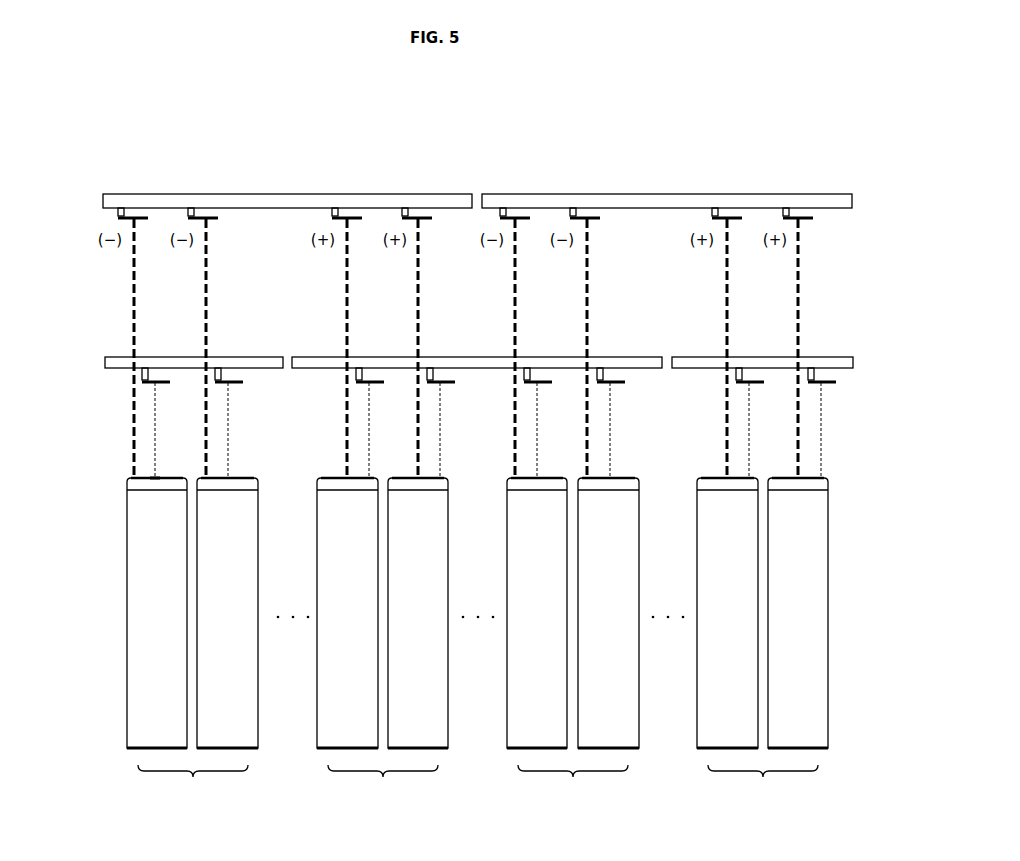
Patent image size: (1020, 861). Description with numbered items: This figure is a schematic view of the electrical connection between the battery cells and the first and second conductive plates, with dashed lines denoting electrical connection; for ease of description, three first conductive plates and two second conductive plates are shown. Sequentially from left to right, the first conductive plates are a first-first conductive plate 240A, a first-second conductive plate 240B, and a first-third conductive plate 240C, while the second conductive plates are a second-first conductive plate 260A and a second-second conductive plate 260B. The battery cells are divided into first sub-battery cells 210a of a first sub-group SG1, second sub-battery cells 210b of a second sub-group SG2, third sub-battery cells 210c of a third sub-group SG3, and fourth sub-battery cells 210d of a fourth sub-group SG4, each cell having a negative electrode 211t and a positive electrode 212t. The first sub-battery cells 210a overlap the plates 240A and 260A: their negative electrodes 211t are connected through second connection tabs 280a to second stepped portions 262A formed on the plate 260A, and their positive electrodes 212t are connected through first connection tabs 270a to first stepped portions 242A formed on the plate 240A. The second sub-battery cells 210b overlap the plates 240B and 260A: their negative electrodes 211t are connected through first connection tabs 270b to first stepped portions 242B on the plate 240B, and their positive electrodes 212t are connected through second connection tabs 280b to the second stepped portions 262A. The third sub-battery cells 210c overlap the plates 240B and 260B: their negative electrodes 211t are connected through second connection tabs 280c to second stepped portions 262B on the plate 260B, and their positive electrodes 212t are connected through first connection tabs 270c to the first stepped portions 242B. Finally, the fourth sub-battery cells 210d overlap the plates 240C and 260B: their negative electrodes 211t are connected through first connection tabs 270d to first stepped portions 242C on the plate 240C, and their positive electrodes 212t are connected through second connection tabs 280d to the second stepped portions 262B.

The second-first conductive plate 260A is at (362, 193).
The second-second conductive plate 260B is at (765, 193).
The second stepped portions 262A is at (118, 218).
The second stepped portions 262B is at (800, 218).
The second connection tabs 280a is at (134, 294).
The second connection tabs 280b is at (420, 287).
The second connection tabs 280c is at (590, 308).
The second connection tabs 280d is at (800, 288).
The first-first conductive plate 240A is at (120, 370).
The first-second conductive plate 240B is at (436, 357).
The first-third conductive plate 240C is at (815, 357).
The first stepped portions 242A is at (150, 383).
The first stepped portions 242B is at (362, 383).
The first stepped portions 242C is at (472, 601).
The first connection tabs 270a is at (228, 455).
The first connection tabs 270b is at (369, 455).
The first connection tabs 270c is at (537, 454).
The first connection tabs 270d is at (821, 442).
The first sub-battery cells 210a is at (122, 652).
The second sub-battery cells 210b is at (320, 736).
The third sub-battery cells 210c is at (510, 736).
The fourth sub-battery cells 210d is at (700, 736).
The negative electrodes 211t is at (127, 483).
The positive electrodes 212t is at (153, 482).
The first sub-group SG1 is at (193, 786).
The second sub-group SG2 is at (383, 786).
The third sub-group SG3 is at (573, 786).
The fourth sub-group SG4 is at (763, 784).